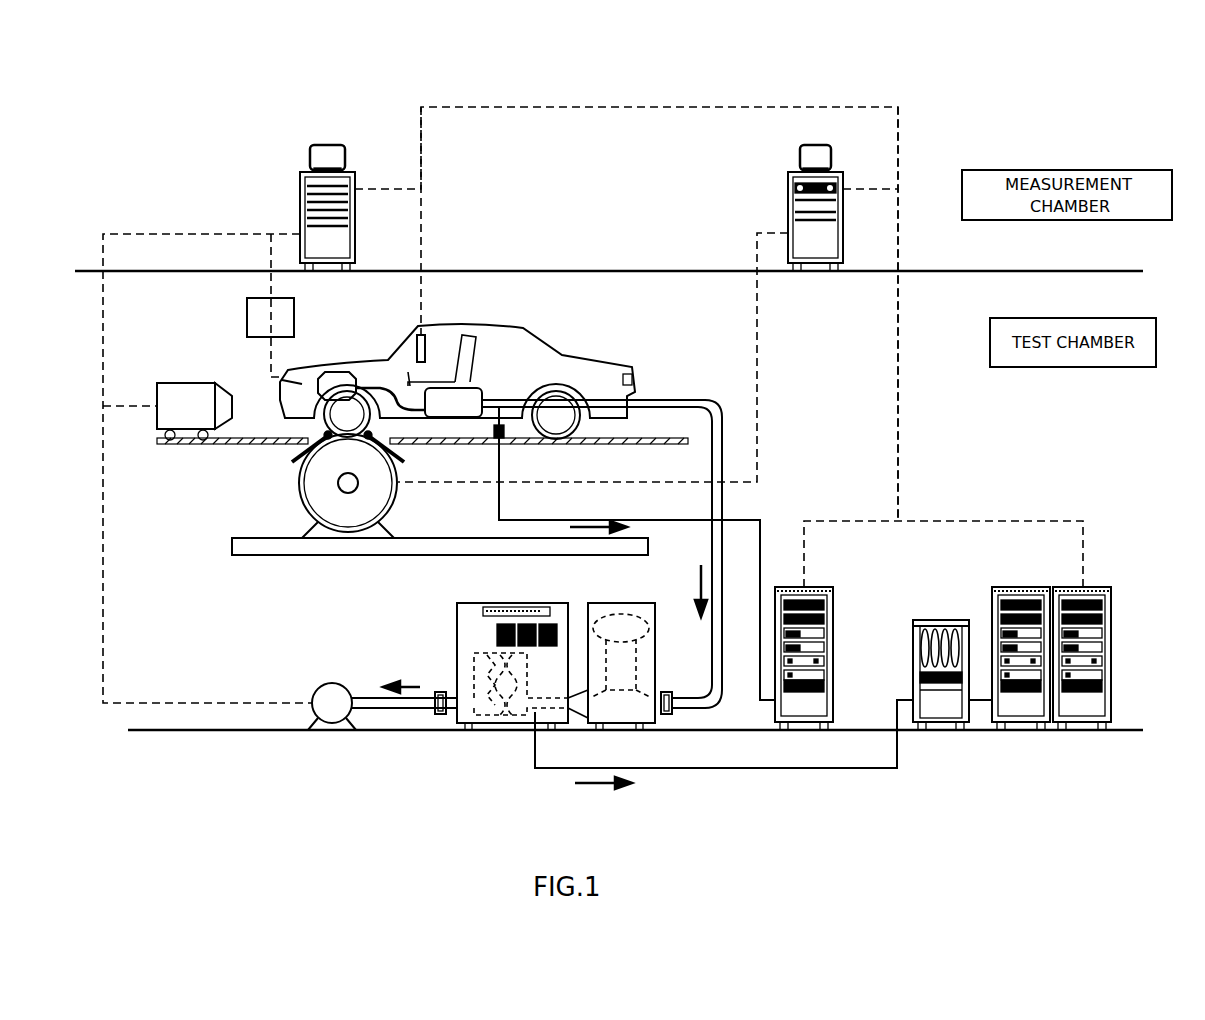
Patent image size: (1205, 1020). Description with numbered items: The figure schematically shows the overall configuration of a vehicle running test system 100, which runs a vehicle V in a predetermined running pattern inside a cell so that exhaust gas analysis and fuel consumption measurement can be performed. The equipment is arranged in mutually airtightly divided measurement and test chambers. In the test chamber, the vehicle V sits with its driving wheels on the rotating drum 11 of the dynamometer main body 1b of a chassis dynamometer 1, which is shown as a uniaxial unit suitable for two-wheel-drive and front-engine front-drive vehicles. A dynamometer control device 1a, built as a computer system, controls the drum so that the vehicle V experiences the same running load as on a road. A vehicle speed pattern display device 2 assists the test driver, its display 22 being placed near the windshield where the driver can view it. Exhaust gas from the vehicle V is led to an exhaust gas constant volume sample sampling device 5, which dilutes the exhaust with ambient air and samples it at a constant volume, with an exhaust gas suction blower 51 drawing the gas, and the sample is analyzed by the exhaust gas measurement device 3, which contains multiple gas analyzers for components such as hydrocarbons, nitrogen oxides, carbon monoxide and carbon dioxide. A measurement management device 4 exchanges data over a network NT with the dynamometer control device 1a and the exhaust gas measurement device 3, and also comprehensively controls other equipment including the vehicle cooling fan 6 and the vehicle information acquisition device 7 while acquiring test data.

The vehicle running test system 100 is at (966, 106).
The chassis dynamometer 1 is at (275, 480).
The dynamometer control device 1a is at (788, 180).
The dynamometer main body 1b is at (318, 495).
The rotating drum 11 is at (395, 498).
The vehicle speed pattern display device 2 is at (417, 350).
The display 22 is at (425, 348).
The exhaust gas measurement device 3 is at (890, 540).
The measurement management device 4 is at (300, 210).
The exhaust gas constant volume sample sampling device 5 is at (432, 624).
The exhaust gas suction blower 51 is at (327, 686).
The vehicle cooling fan 6 is at (162, 383).
The vehicle information acquisition device 7 is at (247, 318).
The vehicle V is at (598, 350).
The network NT is at (880, 314).